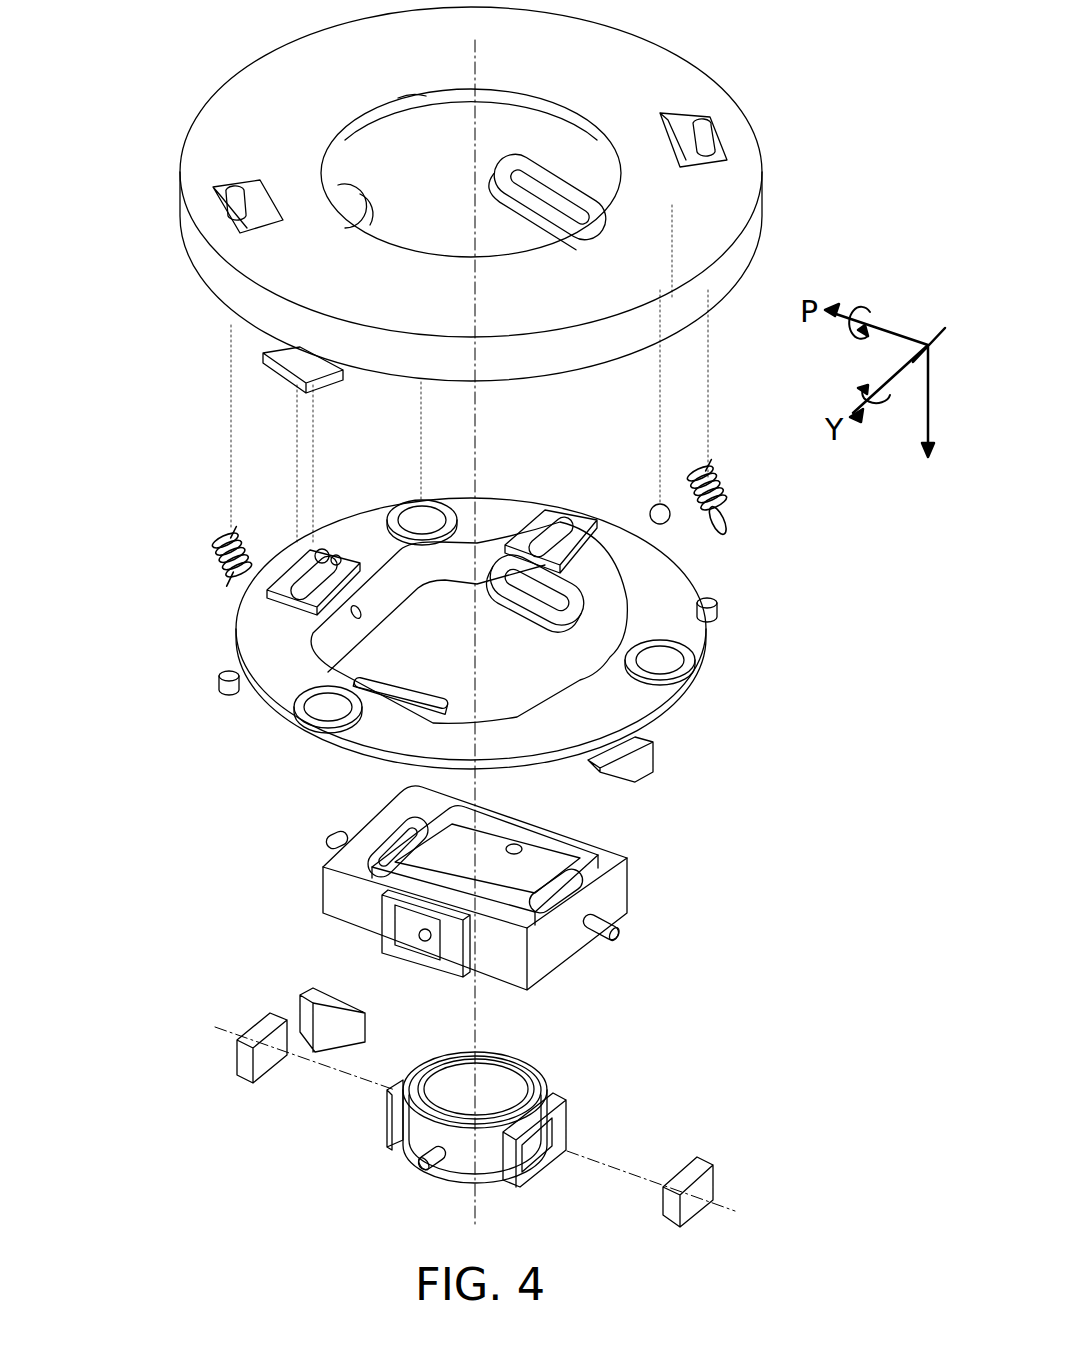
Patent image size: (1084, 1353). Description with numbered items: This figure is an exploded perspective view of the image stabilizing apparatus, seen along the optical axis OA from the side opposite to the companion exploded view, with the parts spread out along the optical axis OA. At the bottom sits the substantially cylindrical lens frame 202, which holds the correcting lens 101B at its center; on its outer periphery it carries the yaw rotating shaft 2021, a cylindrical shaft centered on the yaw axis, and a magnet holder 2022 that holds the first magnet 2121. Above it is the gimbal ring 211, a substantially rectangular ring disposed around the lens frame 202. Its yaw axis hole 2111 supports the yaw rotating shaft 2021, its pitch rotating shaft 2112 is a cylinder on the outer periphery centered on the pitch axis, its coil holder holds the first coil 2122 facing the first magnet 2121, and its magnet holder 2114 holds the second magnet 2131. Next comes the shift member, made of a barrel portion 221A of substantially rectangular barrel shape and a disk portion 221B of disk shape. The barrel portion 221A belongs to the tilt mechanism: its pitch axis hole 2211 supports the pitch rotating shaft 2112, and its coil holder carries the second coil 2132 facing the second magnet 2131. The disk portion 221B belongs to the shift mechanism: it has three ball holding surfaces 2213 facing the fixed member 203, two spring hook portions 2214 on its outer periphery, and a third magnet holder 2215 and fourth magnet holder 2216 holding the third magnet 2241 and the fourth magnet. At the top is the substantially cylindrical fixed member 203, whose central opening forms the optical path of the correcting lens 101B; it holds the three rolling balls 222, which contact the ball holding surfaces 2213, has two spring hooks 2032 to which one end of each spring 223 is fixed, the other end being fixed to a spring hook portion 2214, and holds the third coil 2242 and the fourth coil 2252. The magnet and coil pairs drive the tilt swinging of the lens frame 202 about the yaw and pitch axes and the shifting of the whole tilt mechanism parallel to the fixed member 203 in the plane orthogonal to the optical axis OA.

The fixed member 203 is at (632, 70).
The spring hook 2032 is at (710, 135).
The fourth coil 2252 is at (517, 183).
The third coil 2242 is at (362, 205).
The third magnet 2241 is at (285, 372).
The rolling ball 222 is at (418, 380).
The spring 223 is at (722, 497).
The optical axis OA is at (477, 420).
The barrel portion 221A is at (403, 580).
The disk portion 221B is at (643, 710).
The ball holding surface 2213 is at (422, 520).
The third magnet holder 2215 is at (287, 580).
The fourth magnet holder 2216 is at (528, 535).
The second coil 2132 is at (520, 605).
The pitch axis hole 2211 is at (360, 620).
The spring hook portion 2214 is at (712, 616).
The second magnet 2131 is at (645, 777).
The gimbal ring 211 is at (565, 962).
The magnet holder 2114 is at (417, 972).
The yaw axis hole 2111 is at (518, 850).
The pitch rotating shaft 2112 is at (333, 838).
The first coil 2122 is at (365, 860).
The lens frame 202 is at (470, 1163).
The correcting lens 101B is at (510, 1085).
The magnet holder 2022 is at (385, 1120).
The yaw rotating shaft 2021 is at (418, 1168).
The first magnet 2121 is at (258, 1062).